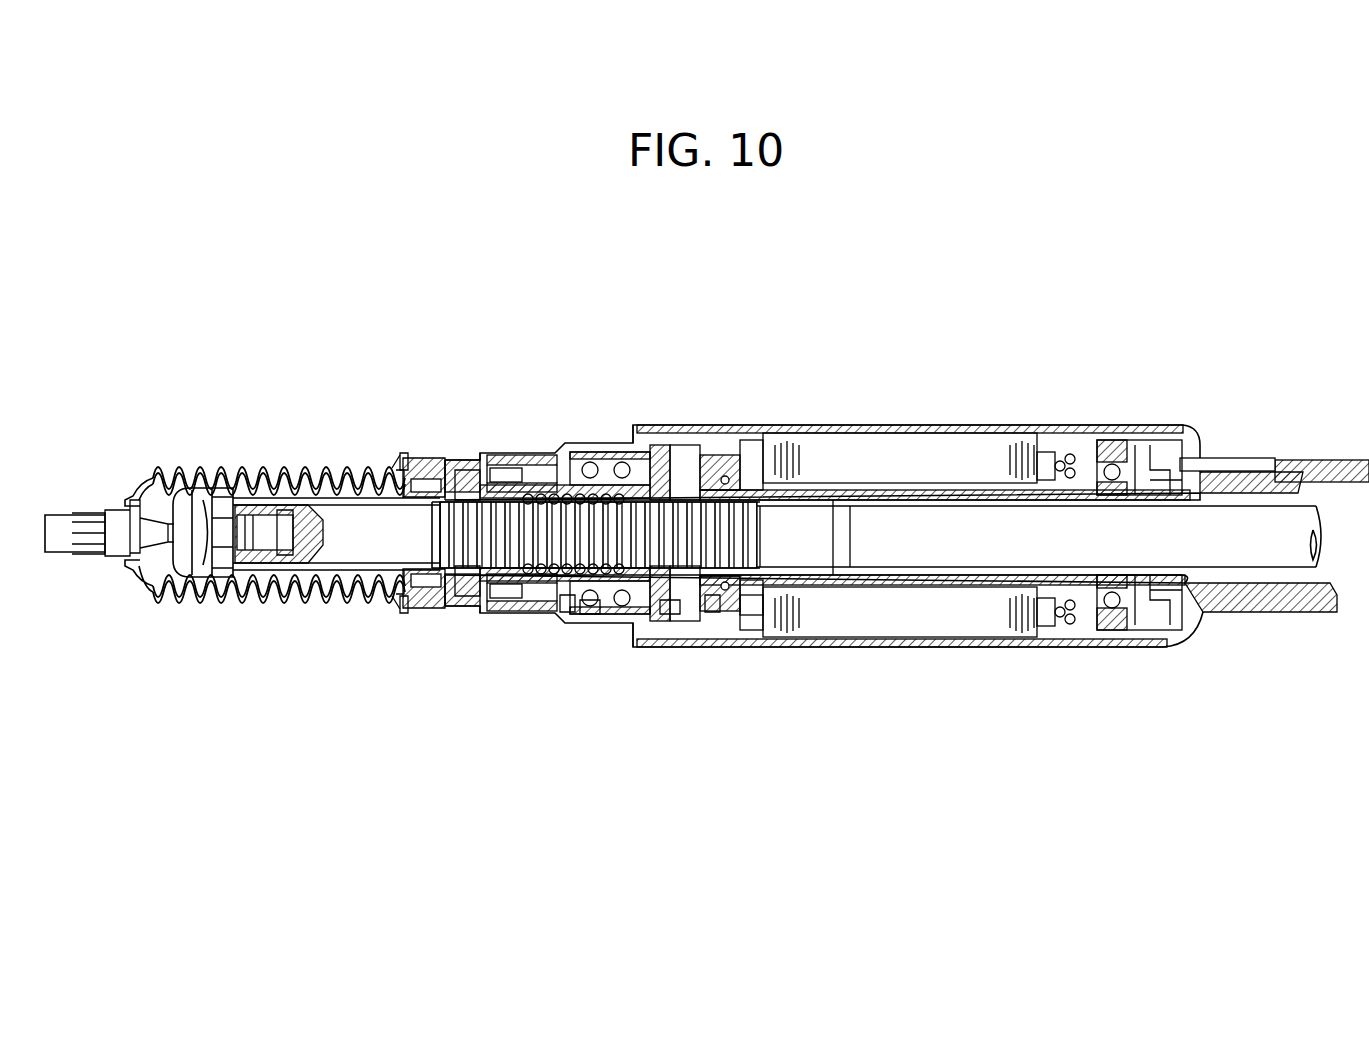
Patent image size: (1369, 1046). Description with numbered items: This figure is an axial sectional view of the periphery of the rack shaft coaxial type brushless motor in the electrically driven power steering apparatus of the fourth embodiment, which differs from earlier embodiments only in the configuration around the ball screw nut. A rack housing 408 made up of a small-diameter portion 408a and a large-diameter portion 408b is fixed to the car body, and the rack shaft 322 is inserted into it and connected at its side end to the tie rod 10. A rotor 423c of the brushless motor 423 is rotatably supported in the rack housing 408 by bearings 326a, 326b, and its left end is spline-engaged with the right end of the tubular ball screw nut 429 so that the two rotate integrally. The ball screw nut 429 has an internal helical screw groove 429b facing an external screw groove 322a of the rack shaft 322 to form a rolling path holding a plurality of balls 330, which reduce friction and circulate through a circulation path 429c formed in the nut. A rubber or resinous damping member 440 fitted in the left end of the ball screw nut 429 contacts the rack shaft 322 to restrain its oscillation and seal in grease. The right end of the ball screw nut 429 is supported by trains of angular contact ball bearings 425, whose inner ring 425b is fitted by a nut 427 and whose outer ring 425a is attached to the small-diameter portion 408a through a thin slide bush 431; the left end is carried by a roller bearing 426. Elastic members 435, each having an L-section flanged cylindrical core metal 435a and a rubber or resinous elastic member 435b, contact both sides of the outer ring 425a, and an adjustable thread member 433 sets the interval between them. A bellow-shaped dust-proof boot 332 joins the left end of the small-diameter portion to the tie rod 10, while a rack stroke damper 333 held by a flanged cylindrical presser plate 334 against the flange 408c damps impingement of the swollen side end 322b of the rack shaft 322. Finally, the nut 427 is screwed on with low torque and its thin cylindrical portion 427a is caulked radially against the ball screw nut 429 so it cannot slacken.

The tie rod 10 is at (58, 515).
The bellow-shaped dust-proof boot 332 is at (260, 458).
The flanged cylindrical presser plate 334 is at (398, 480).
The rack stroke damper 333 is at (420, 457).
The flange 408c is at (448, 458).
The damping member 440 is at (465, 470).
The roller bearing 426 is at (490, 460).
The balls 330 is at (522, 468).
The internal helical screw groove 429b is at (545, 482).
The circulation path 429c is at (565, 480).
The nut 427 is at (590, 460).
The slide bush 431 is at (615, 462).
The outer ring 425a is at (645, 440).
The small-diameter portion 408a is at (660, 440).
The rack housing 408 is at (907, 470).
The large-diameter portion 408b is at (1119, 477).
The bearing 326a is at (742, 455).
The rotor 423c is at (833, 500).
The brushless motor 423 is at (990, 440).
The bearing 326b is at (1115, 440).
The swollen side end 322b is at (218, 577).
The external screw groove 322a is at (400, 590).
The ball screw nut 429 is at (520, 600).
The thin cylindrical portion 427a is at (565, 612).
The elastic member 435b is at (565, 605).
The flanged cylindrical core metal 435a is at (585, 612).
The elastic members 435 is at (645, 676).
The angular contact ball bearings 425 is at (615, 605).
The inner ring 425b is at (630, 612).
The thread member 433 is at (762, 610).
The rack shaft 322 is at (845, 580).